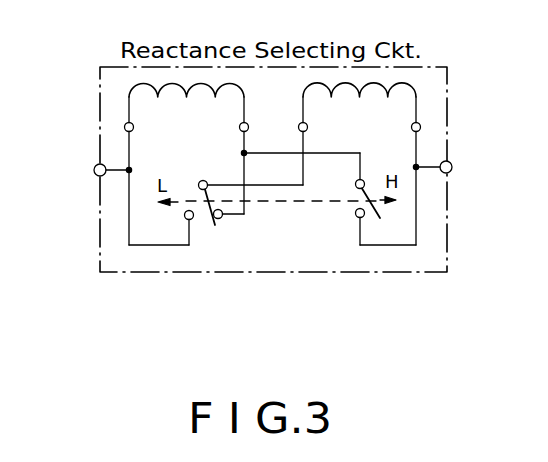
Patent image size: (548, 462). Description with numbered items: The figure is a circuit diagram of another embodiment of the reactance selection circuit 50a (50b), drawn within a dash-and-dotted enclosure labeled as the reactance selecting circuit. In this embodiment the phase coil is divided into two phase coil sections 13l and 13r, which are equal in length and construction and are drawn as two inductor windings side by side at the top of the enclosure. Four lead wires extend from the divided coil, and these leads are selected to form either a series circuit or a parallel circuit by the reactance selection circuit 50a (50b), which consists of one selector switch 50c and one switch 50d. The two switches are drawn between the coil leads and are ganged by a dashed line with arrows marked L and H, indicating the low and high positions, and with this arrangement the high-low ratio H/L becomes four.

The phase coil section 13l is at (129, 100).
The phase coil section 13r is at (416, 93).
The reactance selection circuit 50a is at (350, 272).
The reactance selection circuit 50b is at (273, 169).
The selector switch 50c is at (205, 218).
The switch 50d is at (382, 210).